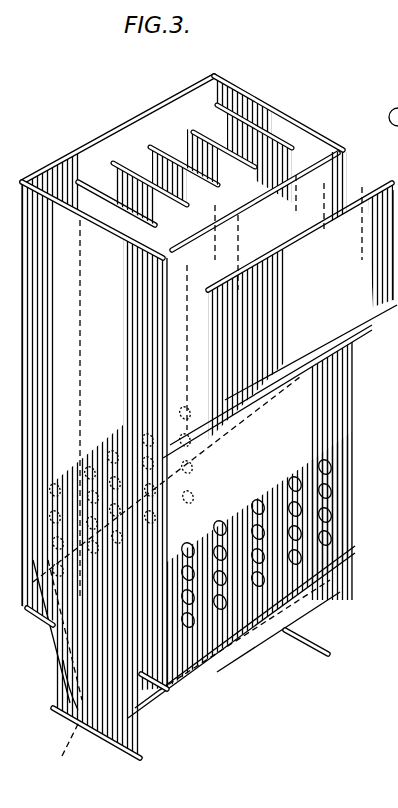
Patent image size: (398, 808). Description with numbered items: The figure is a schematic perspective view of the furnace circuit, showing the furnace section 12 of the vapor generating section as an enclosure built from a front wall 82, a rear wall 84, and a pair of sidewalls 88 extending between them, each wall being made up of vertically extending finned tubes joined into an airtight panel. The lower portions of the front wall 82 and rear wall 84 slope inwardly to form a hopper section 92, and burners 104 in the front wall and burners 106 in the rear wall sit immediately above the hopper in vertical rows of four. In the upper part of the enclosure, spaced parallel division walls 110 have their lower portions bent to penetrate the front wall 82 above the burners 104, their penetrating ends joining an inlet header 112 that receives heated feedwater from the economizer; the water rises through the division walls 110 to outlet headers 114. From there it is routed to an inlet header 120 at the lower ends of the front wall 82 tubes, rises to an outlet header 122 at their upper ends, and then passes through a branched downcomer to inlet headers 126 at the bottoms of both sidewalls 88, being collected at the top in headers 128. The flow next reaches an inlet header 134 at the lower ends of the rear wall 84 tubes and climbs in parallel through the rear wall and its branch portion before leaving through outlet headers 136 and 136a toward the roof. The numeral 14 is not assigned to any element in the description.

The furnace section 12 is at (254, 76).
The furnace wall 14 is at (393, 75).
The front wall 82 is at (140, 130).
The rear wall 84 is at (318, 184).
The sidewalls 88 is at (336, 118).
The hopper section 92 is at (54, 681).
The burners 104 is at (60, 578).
The burners 106 is at (220, 510).
The division walls 110 is at (223, 124).
The inlet header 112 is at (72, 412).
The outlet headers 114 is at (126, 176).
The inlet header 120 is at (72, 717).
The outlet header 122 is at (103, 128).
The inlet headers 126 is at (38, 628).
The headers 128 is at (271, 114).
The inlet header 134 is at (114, 748).
The outlet header 136 is at (240, 216).
The outlet header 136a is at (302, 236).